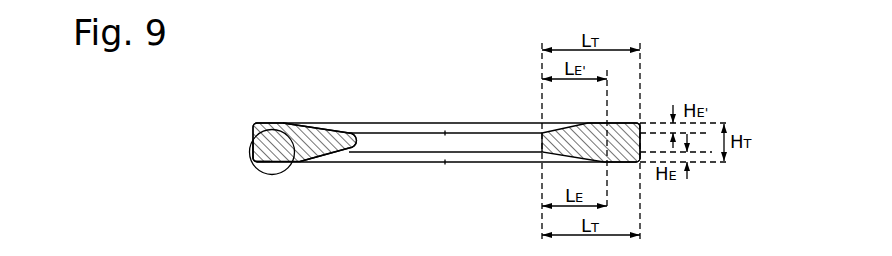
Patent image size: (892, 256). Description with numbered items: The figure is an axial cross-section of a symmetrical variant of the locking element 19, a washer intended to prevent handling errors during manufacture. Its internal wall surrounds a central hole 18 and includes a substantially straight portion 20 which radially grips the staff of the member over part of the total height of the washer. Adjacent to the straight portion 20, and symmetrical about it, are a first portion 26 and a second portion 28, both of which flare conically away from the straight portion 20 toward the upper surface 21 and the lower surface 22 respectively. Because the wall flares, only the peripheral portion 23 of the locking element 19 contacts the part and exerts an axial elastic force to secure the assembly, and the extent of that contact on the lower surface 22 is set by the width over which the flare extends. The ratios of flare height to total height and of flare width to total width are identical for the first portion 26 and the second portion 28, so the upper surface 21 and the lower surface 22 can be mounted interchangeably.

The hole 18 is at (477, 132).
The locking element 19 is at (657, 87).
The straight portion 20 is at (353, 140).
The upper surface 21 is at (282, 122).
The lower surface 22 is at (268, 167).
The peripheral portion 23 is at (252, 168).
The first portion 26 is at (338, 161).
The second portion 28 is at (330, 124).